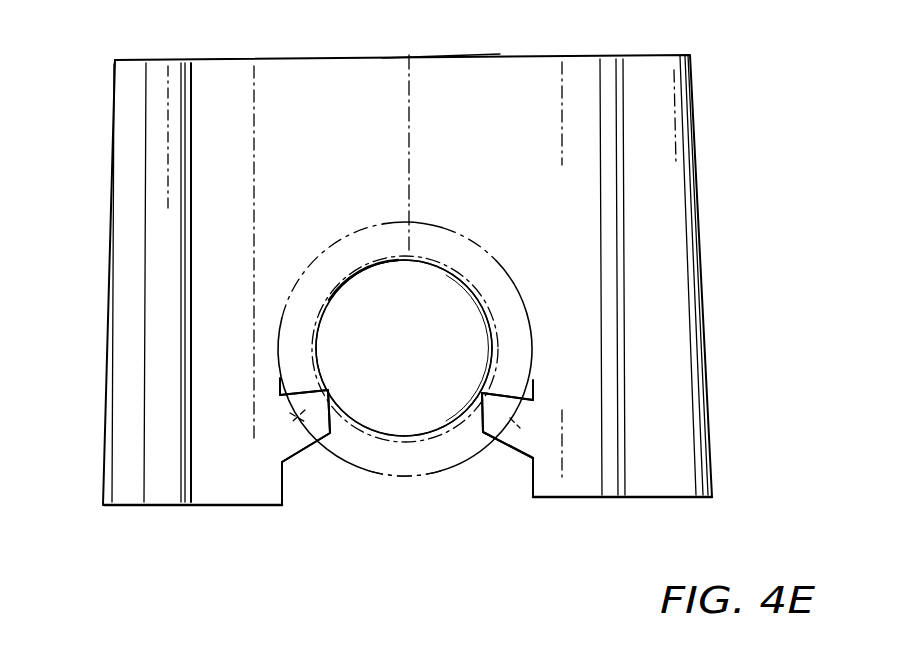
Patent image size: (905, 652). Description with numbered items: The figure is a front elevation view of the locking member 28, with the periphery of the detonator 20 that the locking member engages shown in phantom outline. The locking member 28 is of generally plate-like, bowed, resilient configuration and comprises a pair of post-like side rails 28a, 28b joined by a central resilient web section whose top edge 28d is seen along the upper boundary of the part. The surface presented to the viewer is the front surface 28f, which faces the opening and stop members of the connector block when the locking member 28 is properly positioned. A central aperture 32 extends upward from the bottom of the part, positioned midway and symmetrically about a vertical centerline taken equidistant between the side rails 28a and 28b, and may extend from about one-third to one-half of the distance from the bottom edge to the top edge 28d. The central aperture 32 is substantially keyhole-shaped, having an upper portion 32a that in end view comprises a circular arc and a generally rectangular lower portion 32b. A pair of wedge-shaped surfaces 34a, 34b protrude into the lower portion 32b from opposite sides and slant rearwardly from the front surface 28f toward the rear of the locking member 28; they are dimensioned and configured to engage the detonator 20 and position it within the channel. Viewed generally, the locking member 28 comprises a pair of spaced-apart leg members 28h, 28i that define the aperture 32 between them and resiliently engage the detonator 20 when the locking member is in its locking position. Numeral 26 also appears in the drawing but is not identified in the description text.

The detonator 20 is at (460, 463).
The heater cartridge 26 is at (363, 428).
The locking member 28 is at (728, 190).
The side rail 28a is at (130, 295).
The side rail 28b is at (680, 322).
The top edge 28d is at (381, 52).
The front surface 28f is at (308, 185).
The leg member 28h is at (288, 517).
The leg member 28i is at (717, 506).
The central aperture 32 is at (421, 412).
The upper portion 32a is at (432, 355).
The lower portion 32b is at (430, 465).
The wedge-shaped surface 34a is at (282, 408).
The wedge-shaped surface 34b is at (527, 422).